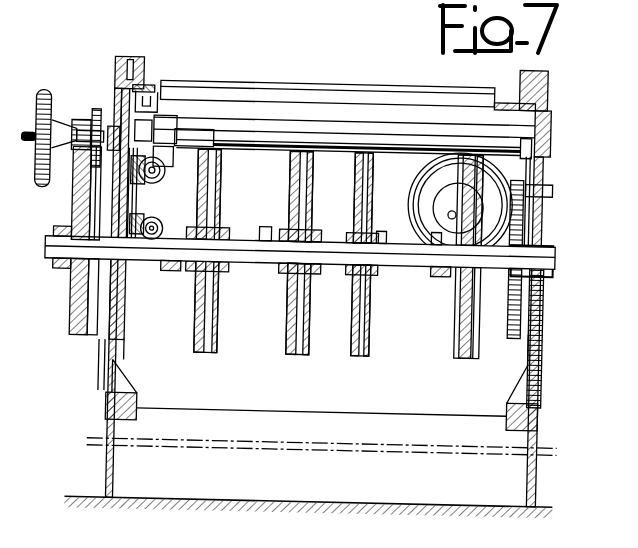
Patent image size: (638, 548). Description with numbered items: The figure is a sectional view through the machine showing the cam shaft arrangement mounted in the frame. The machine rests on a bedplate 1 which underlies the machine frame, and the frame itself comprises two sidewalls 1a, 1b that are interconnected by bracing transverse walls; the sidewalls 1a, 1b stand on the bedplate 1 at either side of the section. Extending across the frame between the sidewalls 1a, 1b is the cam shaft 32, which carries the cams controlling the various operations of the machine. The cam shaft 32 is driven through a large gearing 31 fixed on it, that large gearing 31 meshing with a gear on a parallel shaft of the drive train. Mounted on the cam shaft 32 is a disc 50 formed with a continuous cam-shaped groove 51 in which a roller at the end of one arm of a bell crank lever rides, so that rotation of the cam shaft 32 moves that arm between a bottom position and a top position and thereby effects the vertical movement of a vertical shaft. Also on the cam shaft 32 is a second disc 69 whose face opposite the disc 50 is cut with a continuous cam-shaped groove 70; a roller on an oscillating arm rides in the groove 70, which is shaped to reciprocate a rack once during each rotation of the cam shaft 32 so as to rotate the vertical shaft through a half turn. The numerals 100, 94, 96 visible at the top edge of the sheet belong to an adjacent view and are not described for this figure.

The bedplate 1 is at (532, 473).
The sidewall 1a is at (109, 405).
The sidewall 1b is at (543, 323).
The large gearing 31 is at (68, 204).
The cam shaft 32 is at (231, 247).
The disc 50 is at (365, 182).
The cam-shaped groove 51 is at (353, 341).
The disc 69 is at (311, 197).
The cam-shaped groove 70 is at (289, 336).
The cut-off numeral from adjacent figure 100 is at (243, 1).
The cut-off numeral from adjacent figure 94 is at (315, 1).
The cut-off numeral from adjacent figure 96 is at (363, 0).